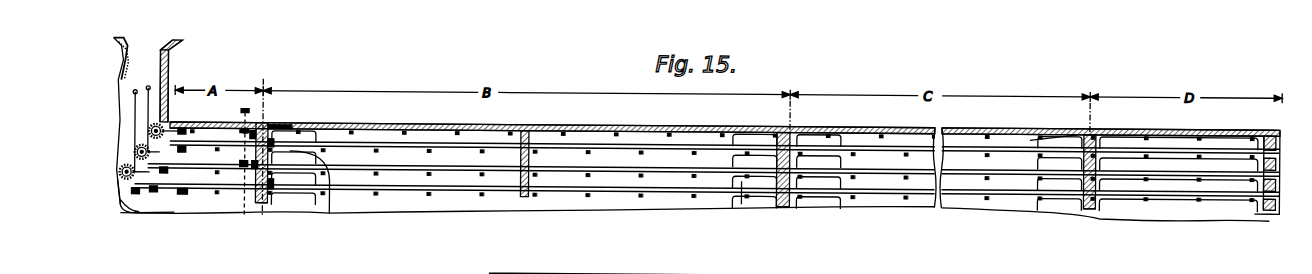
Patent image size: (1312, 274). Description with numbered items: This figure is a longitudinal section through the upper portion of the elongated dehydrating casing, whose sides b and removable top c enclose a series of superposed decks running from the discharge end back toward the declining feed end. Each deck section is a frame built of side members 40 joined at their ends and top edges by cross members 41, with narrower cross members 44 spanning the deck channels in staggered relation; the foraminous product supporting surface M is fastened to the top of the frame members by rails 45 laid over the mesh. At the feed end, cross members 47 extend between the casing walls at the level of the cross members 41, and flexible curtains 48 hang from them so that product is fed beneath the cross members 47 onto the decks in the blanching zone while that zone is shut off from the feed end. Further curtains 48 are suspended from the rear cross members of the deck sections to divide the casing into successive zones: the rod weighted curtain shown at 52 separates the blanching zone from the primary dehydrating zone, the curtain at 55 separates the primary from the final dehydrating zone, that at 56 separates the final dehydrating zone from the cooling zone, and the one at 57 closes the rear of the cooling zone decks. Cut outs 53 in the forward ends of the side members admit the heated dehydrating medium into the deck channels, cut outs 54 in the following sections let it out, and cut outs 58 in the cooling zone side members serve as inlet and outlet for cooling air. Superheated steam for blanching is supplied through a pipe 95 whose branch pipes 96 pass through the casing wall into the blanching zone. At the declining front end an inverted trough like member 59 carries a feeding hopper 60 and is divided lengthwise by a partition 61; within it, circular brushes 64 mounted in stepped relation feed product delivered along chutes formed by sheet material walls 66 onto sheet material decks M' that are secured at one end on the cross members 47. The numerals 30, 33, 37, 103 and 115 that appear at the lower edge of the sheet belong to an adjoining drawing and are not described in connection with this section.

The trough like member 59 is at (168, 44).
The feeding hopper 60 is at (170, 42).
The sheet material walls 66 is at (126, 102).
The circular brushes 64 is at (157, 125).
The partition 61 is at (130, 207).
The cross members 41 is at (195, 122).
The side members 40 is at (402, 156).
The cross members 44 is at (594, 130).
The cross members 47 is at (256, 118).
The flexible wall portions 48 is at (272, 198).
The curtain separating blanching and primary dehydrating zones 52 is at (270, 124).
The cut out portions 53 is at (300, 150).
The cut outs 54 is at (742, 198).
The curtain separating primary and final dehydrating zones 55 is at (795, 118).
The curtain separating final dehydrating zone and cooling zone 56 is at (1082, 116).
The curtain at rear of cooling zone 57 is at (1275, 118).
The cut outs 58 is at (1153, 200).
The pipe 95 is at (243, 114).
The branch pipes 96 is at (242, 131).
The product supporting surface M is at (746, 204).
The deck sheet material M' is at (221, 216).
The sides b is at (607, 200).
The removable top c is at (630, 128).
The frame 30 is at (1198, 272).
The member 115 is at (345, 273).
The rails 45 is at (530, 270).
The member 103 is at (660, 270).
The member 33 is at (968, 270).
The member 37 is at (1018, 270).